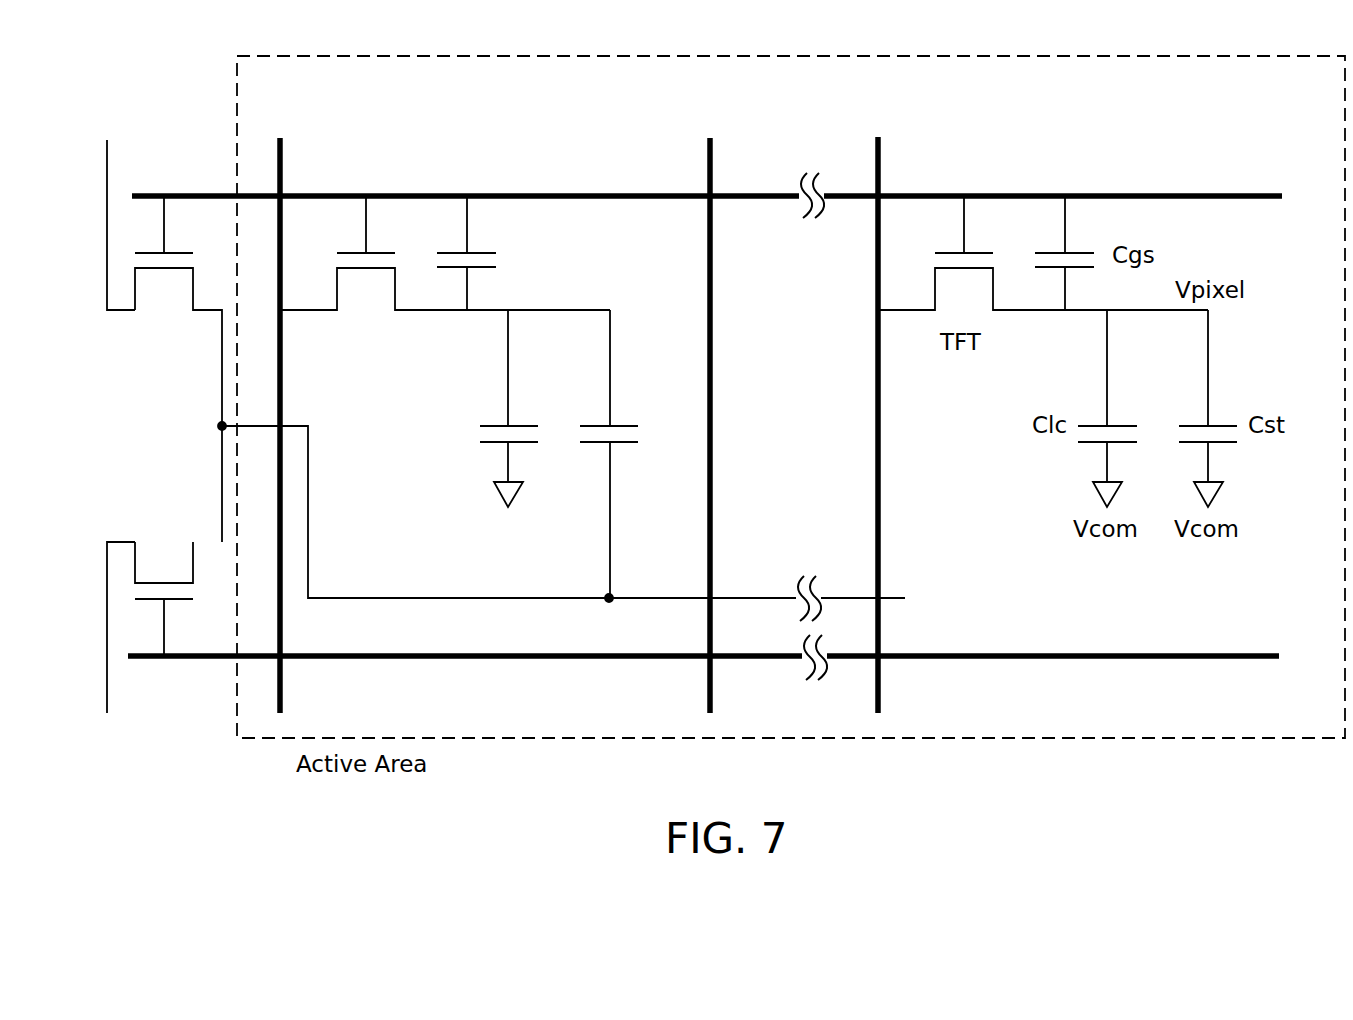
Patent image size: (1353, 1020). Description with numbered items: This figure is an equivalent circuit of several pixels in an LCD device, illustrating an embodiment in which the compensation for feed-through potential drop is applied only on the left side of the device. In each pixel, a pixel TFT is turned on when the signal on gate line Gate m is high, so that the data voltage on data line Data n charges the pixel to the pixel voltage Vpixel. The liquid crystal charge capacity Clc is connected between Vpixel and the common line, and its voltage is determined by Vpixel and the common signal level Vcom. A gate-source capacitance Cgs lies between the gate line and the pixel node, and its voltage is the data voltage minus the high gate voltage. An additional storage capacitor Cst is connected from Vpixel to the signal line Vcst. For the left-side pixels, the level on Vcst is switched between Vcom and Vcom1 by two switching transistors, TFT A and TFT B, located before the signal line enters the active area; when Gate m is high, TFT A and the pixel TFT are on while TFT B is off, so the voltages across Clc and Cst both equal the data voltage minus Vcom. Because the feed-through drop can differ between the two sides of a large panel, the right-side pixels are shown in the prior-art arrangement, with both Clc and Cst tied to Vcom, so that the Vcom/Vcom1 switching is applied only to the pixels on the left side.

The gate line m Gate m is at (707, 189).
The data line n Data n is at (321, 406).
The common line voltage Vcom is at (107, 212).
The common line voltage Vcom1 is at (108, 649).
The switching TFT A is at (174, 369).
The switching TFT B is at (160, 580).
The pixel TFT is at (445, 275).
The gate-source capacitance Cgs is at (496, 253).
The liquid crystal capacitance Clc is at (487, 426).
The additional charge storage capacitor Cst is at (632, 454).
The pixel voltage Vpixel is at (638, 290).
The signal line VCst Vcst is at (561, 521).